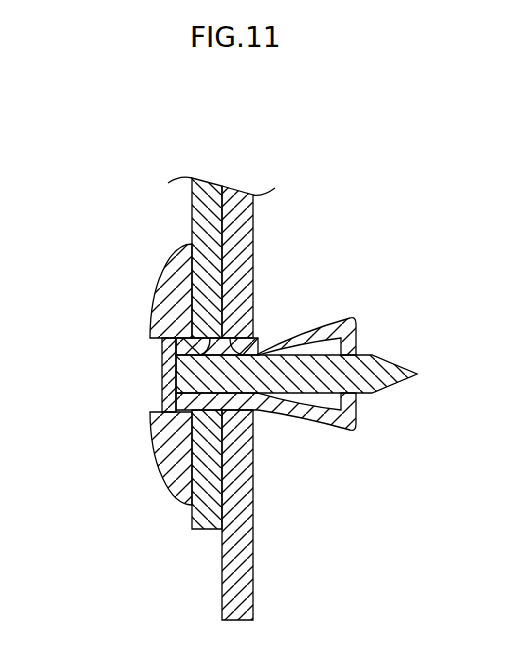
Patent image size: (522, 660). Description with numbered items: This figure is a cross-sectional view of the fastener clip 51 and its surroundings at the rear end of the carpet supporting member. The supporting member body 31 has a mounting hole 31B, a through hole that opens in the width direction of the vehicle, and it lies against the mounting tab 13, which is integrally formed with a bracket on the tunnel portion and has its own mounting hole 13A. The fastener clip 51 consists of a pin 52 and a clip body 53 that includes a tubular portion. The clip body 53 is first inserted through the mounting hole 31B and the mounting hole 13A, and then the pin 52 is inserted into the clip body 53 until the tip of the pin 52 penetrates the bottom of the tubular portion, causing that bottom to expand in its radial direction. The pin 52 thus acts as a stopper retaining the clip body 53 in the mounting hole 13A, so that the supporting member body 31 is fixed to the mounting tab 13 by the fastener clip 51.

The mounting tab 13 is at (238, 208).
The supporting member body 31 is at (209, 210).
The mounting hole 13A is at (257, 348).
The mounting hole 31B is at (177, 353).
The fastener clip 51 is at (219, 374).
The pin 52 is at (205, 377).
The clip body 53 is at (175, 450).